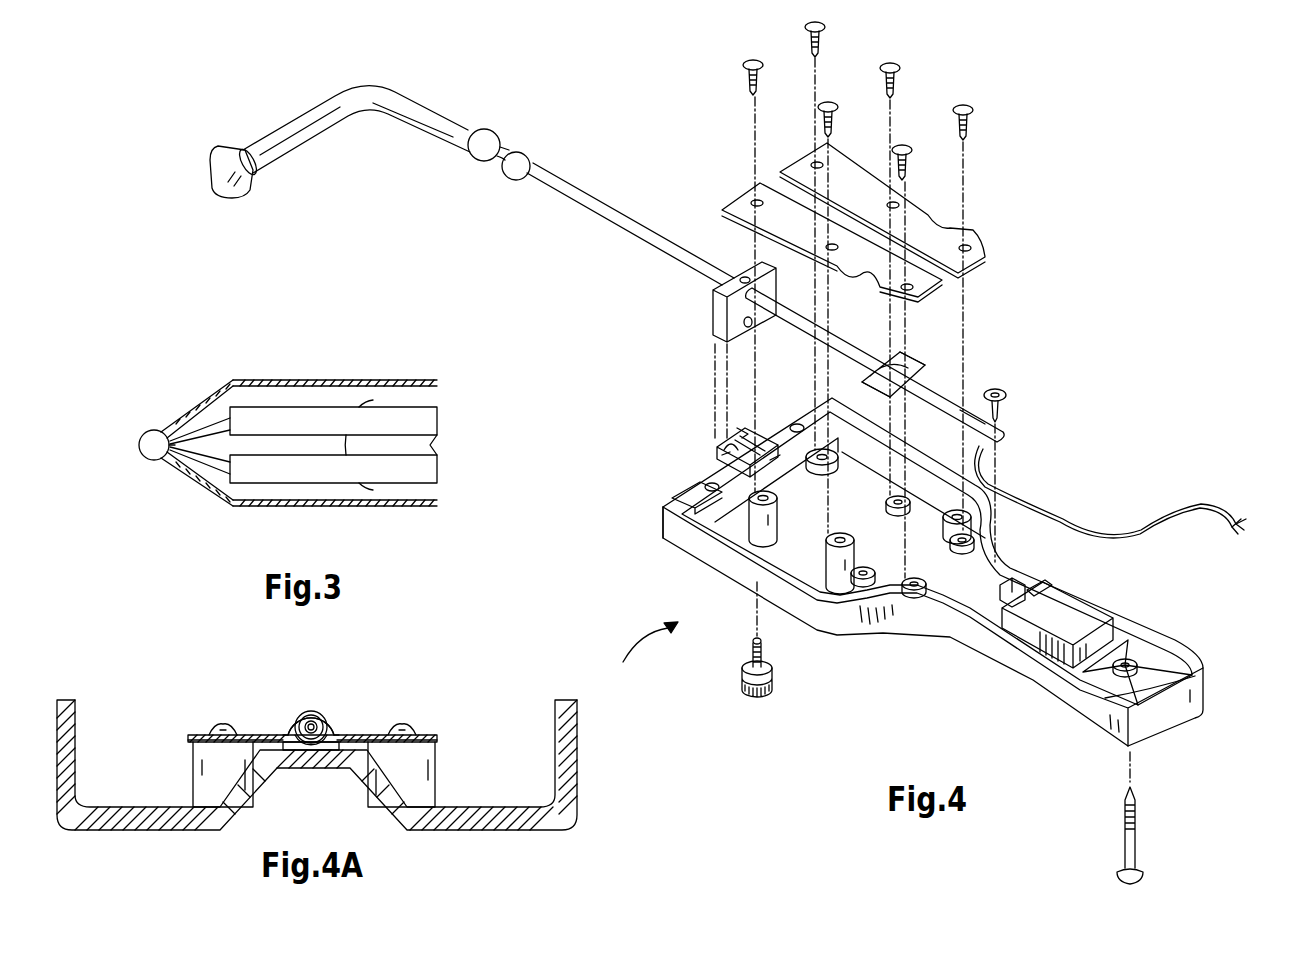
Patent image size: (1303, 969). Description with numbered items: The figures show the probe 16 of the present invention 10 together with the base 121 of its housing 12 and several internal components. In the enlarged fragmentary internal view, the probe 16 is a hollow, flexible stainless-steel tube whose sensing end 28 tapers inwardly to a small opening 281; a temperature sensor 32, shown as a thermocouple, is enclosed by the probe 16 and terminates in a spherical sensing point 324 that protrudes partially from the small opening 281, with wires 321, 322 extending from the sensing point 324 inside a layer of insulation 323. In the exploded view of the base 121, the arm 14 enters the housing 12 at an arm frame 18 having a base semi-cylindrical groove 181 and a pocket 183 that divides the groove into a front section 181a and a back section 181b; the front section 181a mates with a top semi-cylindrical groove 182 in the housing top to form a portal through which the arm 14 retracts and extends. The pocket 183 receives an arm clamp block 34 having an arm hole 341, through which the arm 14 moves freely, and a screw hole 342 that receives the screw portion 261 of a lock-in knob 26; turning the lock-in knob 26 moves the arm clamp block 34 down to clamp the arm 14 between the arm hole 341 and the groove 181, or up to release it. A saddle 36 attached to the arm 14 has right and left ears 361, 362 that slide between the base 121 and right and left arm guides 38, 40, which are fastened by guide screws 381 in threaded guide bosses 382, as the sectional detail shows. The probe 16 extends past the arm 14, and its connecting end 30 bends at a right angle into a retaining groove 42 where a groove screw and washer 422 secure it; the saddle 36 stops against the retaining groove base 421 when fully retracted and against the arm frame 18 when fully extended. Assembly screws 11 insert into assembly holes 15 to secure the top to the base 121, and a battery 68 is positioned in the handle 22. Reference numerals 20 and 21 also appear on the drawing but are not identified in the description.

In FIG. 4, the present invention 10 is at (644, 656).
In FIG. 4, the assembly screws 11 is at (1128, 857).
In FIG. 4, the housing 12 is at (683, 553).
In FIG. 4A, the base 121 is at (570, 793).
In FIG. 4, the base 121 is at (668, 542).
In FIG. 4A, the arm 14 is at (297, 767).
In FIG. 4, the arm 14 is at (567, 200).
In FIG. 4, the assembly holes 15 is at (767, 423).
In FIG. 3, the probe 16 is at (260, 508).
In FIG. 4A, the probe 16 is at (293, 702).
In FIG. 4, the probe 16 is at (963, 418).
In FIG. 4, the arm frame 18 is at (722, 473).
In FIG. 4, the base semi-cylindrical groove 181 is at (730, 447).
In FIG. 4, the front section 181a is at (725, 452).
In FIG. 4, the back section 181b is at (780, 465).
In FIG. 4, the top semi-cylindrical groove 182 is at (672, 495).
In FIG. 4, the pocket 183 is at (737, 432).
In FIG. 4, the joint 20 is at (493, 165).
In FIG. 4, the handle cap 21 is at (250, 190).
In FIG. 4, the handle 22 is at (1065, 710).
In FIG. 4, the lock-in knob 26 is at (745, 688).
In FIG. 4, the screw portion 261 is at (745, 650).
In FIG. 3, the sensing end 28 is at (187, 485).
In FIG. 3, the small opening 281 is at (150, 460).
In FIG. 4, the connecting end 30 is at (1000, 440).
In FIG. 3, the temperature sensor 32 is at (375, 400).
In FIG. 3, the wire 321 is at (317, 407).
In FIG. 4A, the wire 321 is at (327, 767).
In FIG. 4, the wire 321 is at (1238, 527).
In FIG. 3, the wire 322 is at (293, 485).
In FIG. 4A, the wire 322 is at (293, 718).
In FIG. 4, the wire 322 is at (1236, 545).
In FIG. 3, the layer of insulation 323 is at (253, 407).
In FIG. 3, the sensing point 324 is at (140, 438).
In FIG. 4, the arm clamp block 34 is at (713, 308).
In FIG. 4, the arm hole 341 is at (760, 265).
In FIG. 4, the screw hole 342 is at (717, 335).
In FIG. 4A, the saddle 36 is at (330, 710).
In FIG. 4, the saddle 36 is at (922, 385).
In FIG. 4A, the right ear 361 is at (370, 795).
In FIG. 4, the right ear 361 is at (930, 362).
In FIG. 4A, the left ear 362 is at (277, 750).
In FIG. 4, the left ear 362 is at (860, 390).
In FIG. 4A, the right arm guide 38 is at (438, 738).
In FIG. 4, the right arm guide 38 is at (987, 263).
In FIG. 4A, the guide screws 381 is at (217, 730).
In FIG. 4, the guide screws 381 is at (810, 28).
In FIG. 4A, the threaded guide bosses 382 is at (193, 767).
In FIG. 4, the threaded guide bosses 382 is at (825, 430).
In FIG. 4A, the left arm guide 40 is at (187, 737).
In FIG. 4, the left arm guide 40 is at (945, 285).
In FIG. 4, the retaining groove 42 is at (1027, 587).
In FIG. 4, the retaining groove base 421 is at (1045, 598).
In FIG. 4, the groove screw and washer 422 is at (1007, 393).
In FIG. 4, the battery 68 is at (1110, 612).